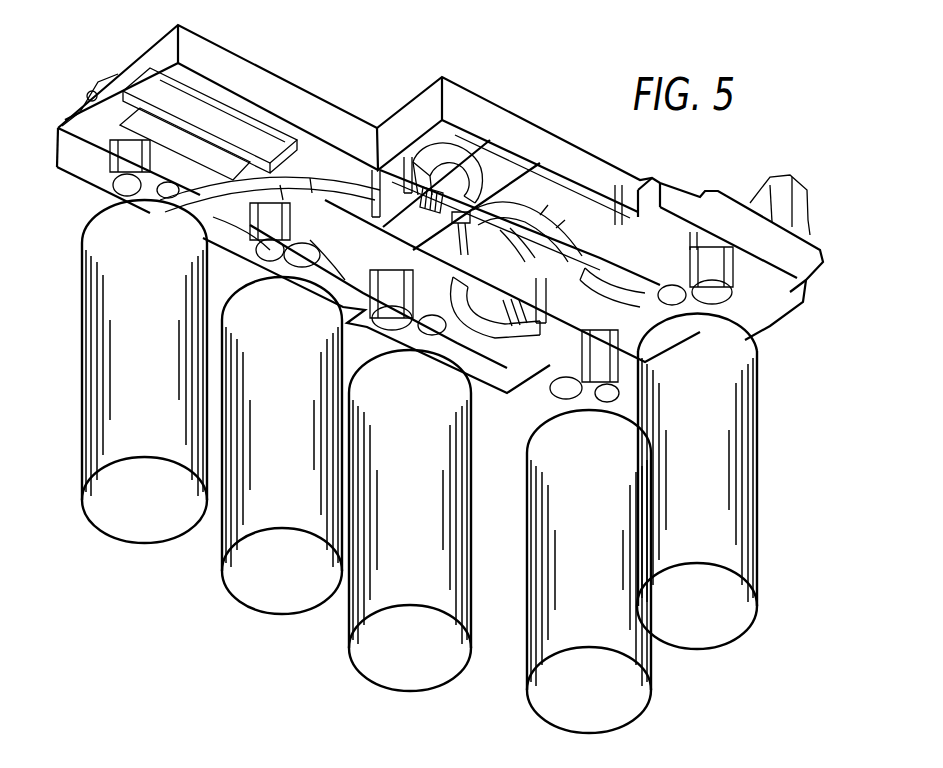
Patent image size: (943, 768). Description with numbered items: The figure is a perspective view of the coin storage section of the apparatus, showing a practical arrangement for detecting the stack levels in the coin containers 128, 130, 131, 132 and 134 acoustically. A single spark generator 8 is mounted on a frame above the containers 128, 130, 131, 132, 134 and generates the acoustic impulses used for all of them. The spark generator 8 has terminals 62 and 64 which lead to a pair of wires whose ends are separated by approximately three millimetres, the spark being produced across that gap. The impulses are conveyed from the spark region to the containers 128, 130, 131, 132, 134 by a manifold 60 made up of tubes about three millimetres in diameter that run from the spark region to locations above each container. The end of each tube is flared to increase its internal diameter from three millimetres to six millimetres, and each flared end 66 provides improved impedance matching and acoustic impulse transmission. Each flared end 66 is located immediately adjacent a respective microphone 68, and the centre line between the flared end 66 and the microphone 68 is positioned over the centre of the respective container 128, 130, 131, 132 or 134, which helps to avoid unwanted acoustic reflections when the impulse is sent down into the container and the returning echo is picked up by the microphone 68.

The spark generator 8 is at (492, 185).
The manifold 60 is at (445, 168).
The terminal 62 is at (500, 258).
The terminal 64 is at (413, 223).
The flared end 66 is at (175, 170).
The microphone 68 is at (118, 196).
The container 128 is at (133, 527).
The container 130 is at (272, 603).
The container 131 is at (398, 673).
The container 132 is at (637, 698).
The container 134 is at (733, 523).